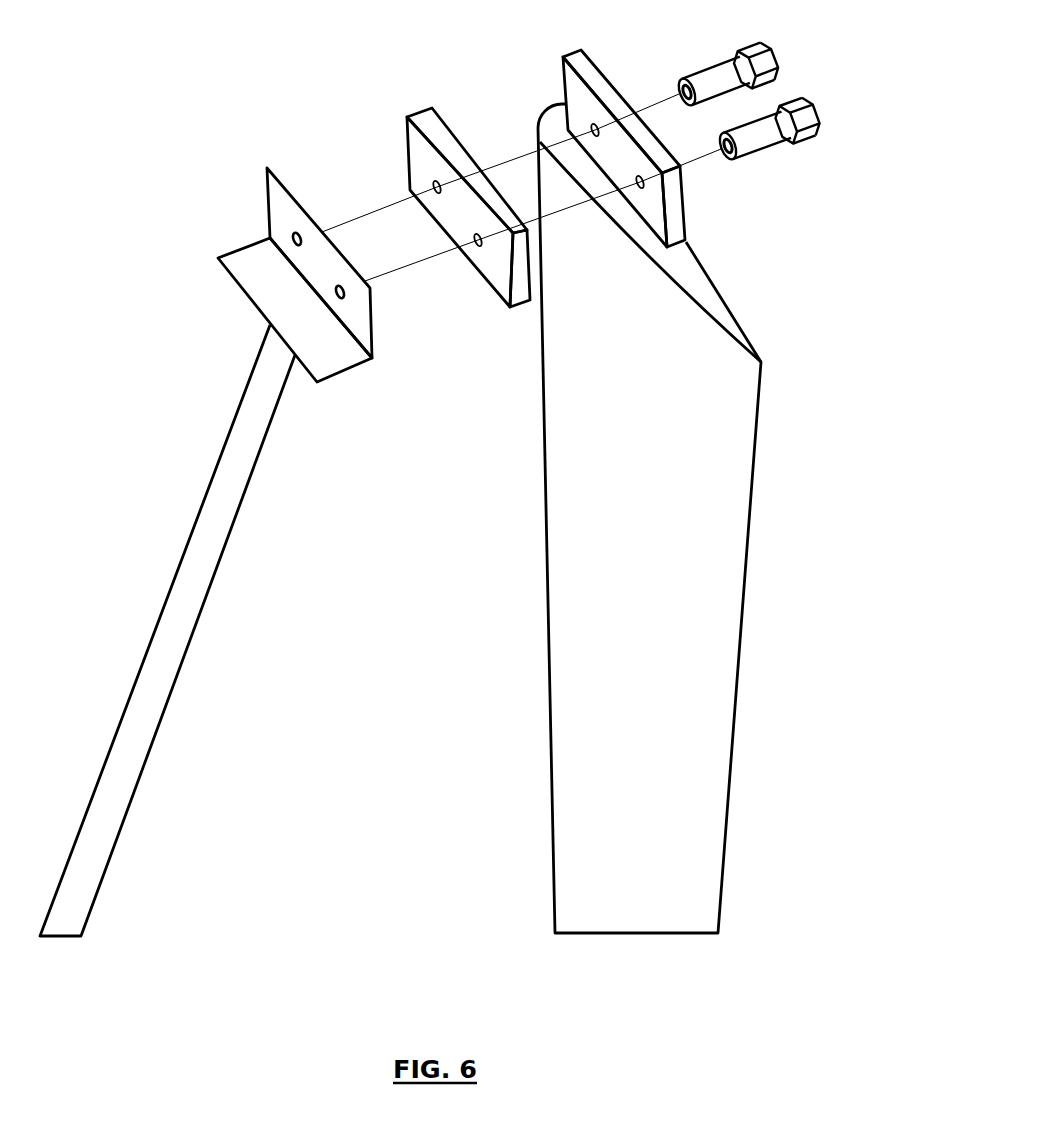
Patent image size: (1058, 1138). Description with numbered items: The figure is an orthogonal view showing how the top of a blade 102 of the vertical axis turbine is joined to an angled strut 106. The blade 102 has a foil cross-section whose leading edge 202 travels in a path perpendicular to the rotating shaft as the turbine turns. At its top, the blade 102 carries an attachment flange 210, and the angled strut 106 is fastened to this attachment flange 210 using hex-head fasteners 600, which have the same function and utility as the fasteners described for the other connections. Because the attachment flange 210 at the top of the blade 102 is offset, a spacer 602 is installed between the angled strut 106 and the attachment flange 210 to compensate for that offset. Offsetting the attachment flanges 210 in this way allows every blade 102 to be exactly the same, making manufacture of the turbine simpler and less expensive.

The blade 102 is at (592, 548).
The angled strut 106 is at (208, 486).
The leading edge 202 is at (622, 143).
The attachment flange 210 is at (690, 212).
The hex-head fasteners 600 is at (771, 45).
The spacer 602 is at (404, 150).